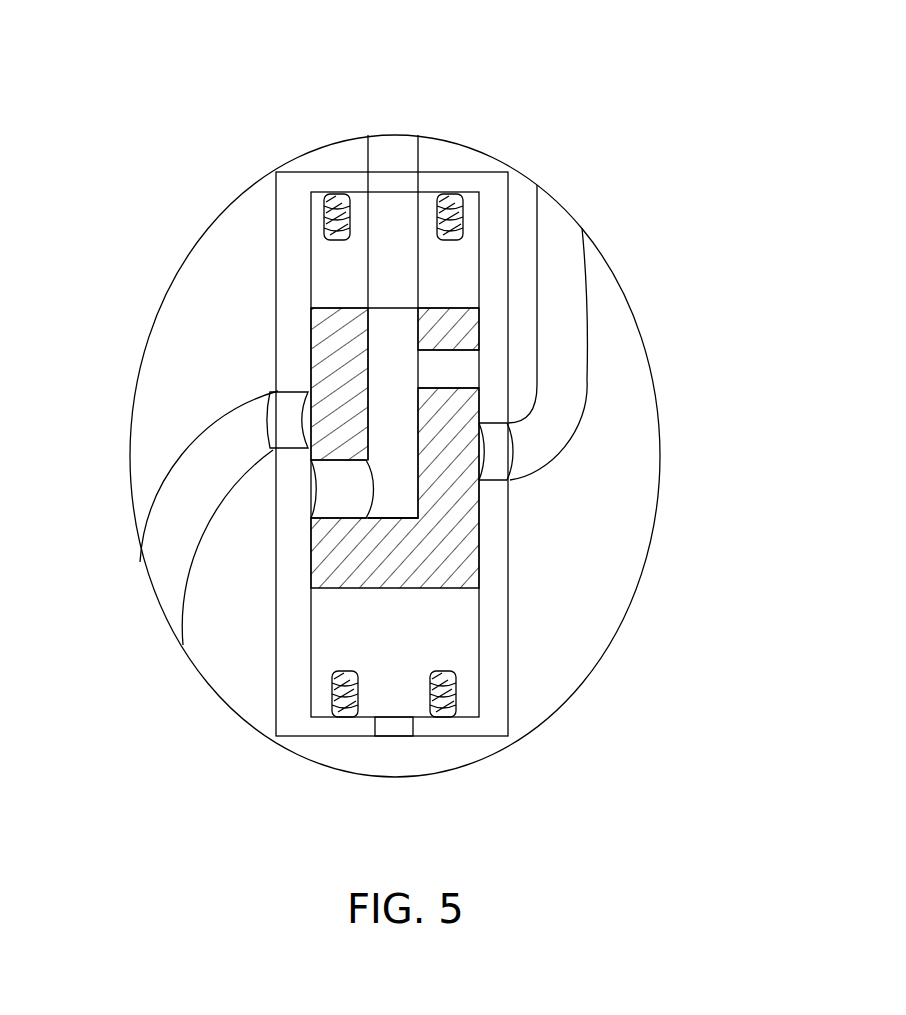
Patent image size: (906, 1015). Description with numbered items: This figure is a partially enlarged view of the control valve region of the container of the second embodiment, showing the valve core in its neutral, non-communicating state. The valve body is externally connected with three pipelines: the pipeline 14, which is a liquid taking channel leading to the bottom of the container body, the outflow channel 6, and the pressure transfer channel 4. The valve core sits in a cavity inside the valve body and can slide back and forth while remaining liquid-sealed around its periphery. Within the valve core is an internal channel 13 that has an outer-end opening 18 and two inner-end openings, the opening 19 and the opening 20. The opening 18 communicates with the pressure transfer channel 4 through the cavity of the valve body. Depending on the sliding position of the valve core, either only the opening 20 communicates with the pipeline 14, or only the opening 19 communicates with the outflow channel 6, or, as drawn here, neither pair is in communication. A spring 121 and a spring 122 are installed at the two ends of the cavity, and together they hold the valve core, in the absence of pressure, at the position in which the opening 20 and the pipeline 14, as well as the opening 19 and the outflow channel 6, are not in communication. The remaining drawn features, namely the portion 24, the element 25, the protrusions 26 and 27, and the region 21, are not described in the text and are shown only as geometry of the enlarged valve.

The pressure transfer channel 4 is at (388, 157).
The flow passage 24 is at (388, 257).
The opening 18 is at (390, 310).
The spring 121 is at (332, 197).
The spring 122 is at (337, 703).
The internal channel 13 is at (293, 323).
The opening 19 is at (450, 370).
The outflow channel 6 is at (568, 372).
The left protrusion 26 is at (287, 422).
The right protrusion 27 is at (497, 452).
The pipeline 14 is at (178, 517).
The valve element 25 is at (338, 498).
The opening 20 is at (467, 498).
The chamber 21 is at (390, 458).